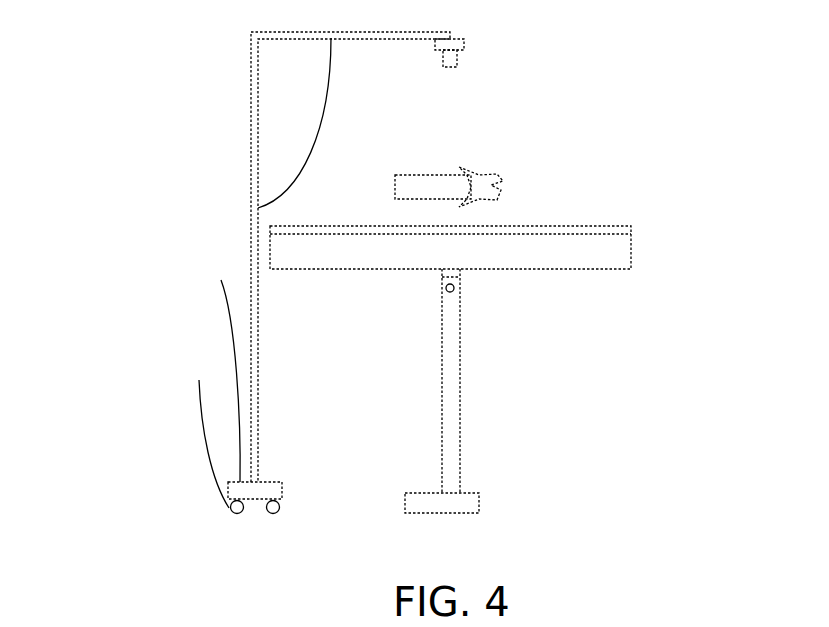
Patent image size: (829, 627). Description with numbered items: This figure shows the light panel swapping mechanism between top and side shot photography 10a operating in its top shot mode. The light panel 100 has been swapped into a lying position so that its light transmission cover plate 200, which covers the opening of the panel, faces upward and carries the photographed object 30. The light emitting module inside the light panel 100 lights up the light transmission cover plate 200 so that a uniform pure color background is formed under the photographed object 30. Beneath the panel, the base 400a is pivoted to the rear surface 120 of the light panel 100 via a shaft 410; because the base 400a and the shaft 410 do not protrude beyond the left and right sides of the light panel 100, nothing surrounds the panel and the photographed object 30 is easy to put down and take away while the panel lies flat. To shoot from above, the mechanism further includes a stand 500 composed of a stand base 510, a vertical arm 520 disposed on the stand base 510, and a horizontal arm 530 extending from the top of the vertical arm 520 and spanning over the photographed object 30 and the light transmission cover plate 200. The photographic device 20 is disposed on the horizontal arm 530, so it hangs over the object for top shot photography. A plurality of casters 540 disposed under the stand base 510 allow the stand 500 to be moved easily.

The light panel swapping mechanism between top and side shot photography 10a is at (635, 415).
The photographic device 20 is at (465, 45).
The photographed object 30 is at (493, 173).
The light panel 100 is at (631, 247).
The rear surface 120 is at (557, 272).
The light transmission cover plate 200 is at (617, 225).
The base 400a is at (480, 504).
The shaft 410 is at (453, 289).
The stand 500 is at (120, 197).
The stand base 510 is at (220, 280).
The vertical arm 520 is at (253, 263).
The horizontal arm 530 is at (257, 208).
The casters 540 is at (198, 380).